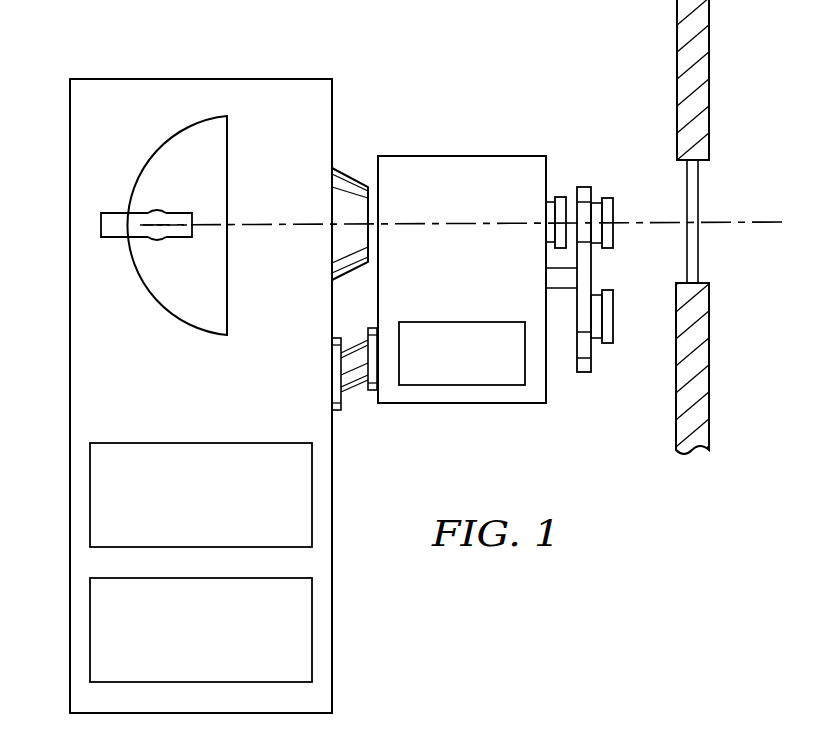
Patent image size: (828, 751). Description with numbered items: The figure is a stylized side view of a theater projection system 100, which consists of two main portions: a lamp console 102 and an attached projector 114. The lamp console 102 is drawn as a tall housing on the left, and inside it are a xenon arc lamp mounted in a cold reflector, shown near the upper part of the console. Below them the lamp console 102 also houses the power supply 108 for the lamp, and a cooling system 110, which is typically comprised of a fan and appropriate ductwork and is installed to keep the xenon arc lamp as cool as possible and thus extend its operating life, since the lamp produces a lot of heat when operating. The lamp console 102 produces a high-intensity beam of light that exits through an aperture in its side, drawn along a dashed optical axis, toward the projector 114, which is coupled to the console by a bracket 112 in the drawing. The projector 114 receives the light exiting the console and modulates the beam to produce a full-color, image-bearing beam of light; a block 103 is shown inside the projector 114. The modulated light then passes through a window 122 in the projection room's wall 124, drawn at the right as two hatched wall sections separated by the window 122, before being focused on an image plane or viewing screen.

The theater projection system 100 is at (256, 49).
The lamp console 102 is at (68, 403).
The controller 103 is at (482, 363).
The power supply 108 is at (221, 507).
The cooling system 110 is at (221, 643).
The mounting bracket 112 is at (352, 397).
The projector 114 is at (472, 155).
The window 122 is at (700, 243).
The wall 124 is at (712, 78).